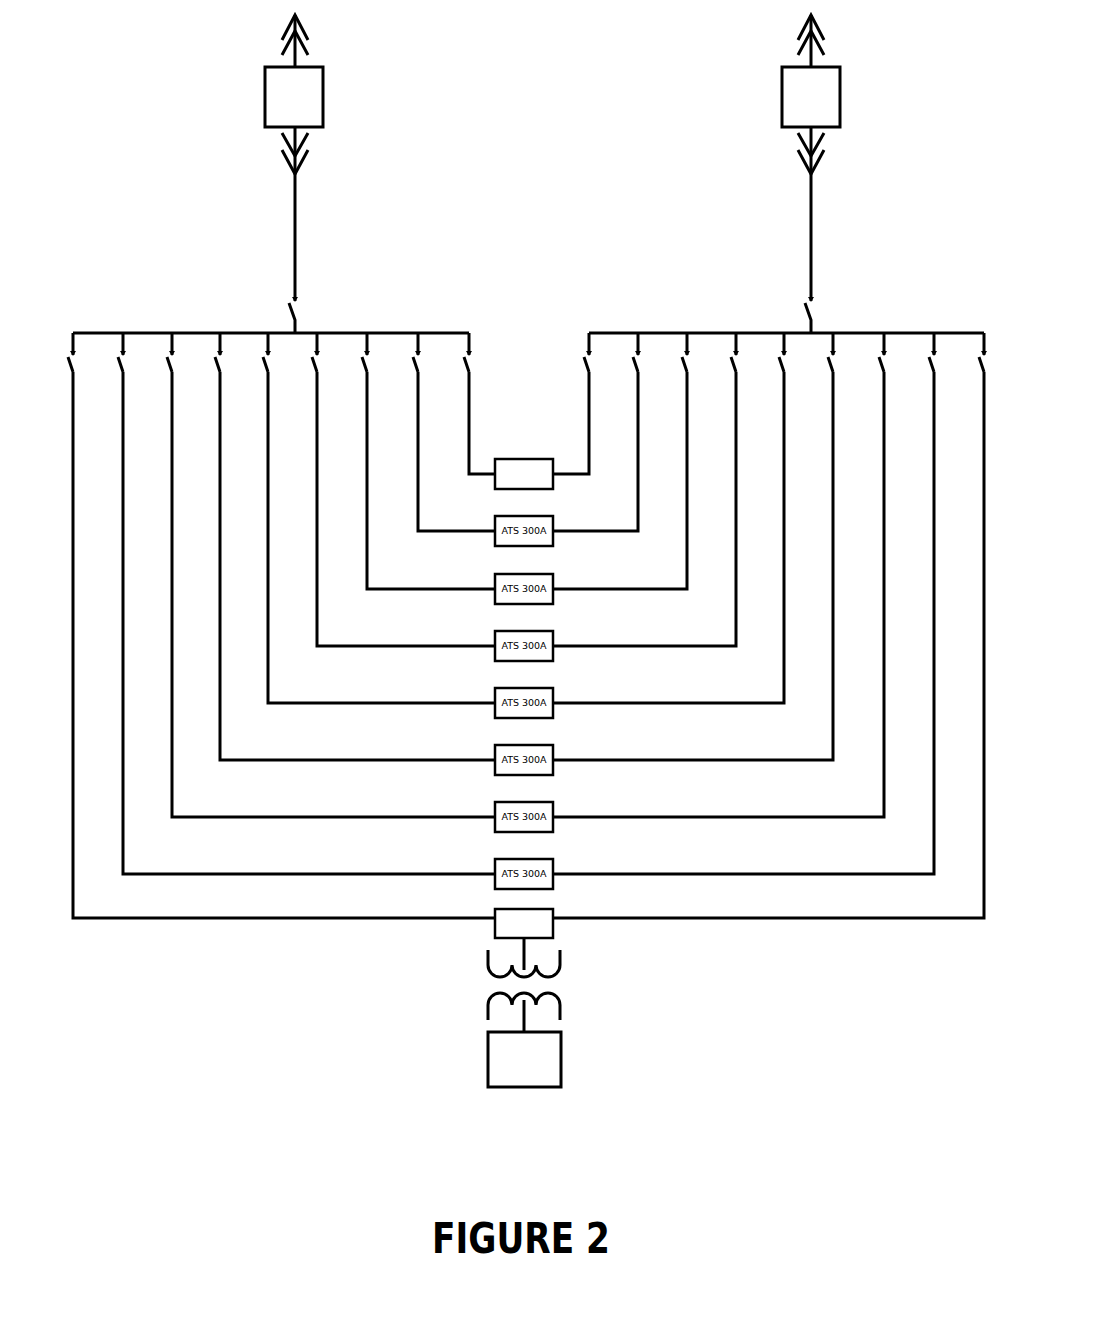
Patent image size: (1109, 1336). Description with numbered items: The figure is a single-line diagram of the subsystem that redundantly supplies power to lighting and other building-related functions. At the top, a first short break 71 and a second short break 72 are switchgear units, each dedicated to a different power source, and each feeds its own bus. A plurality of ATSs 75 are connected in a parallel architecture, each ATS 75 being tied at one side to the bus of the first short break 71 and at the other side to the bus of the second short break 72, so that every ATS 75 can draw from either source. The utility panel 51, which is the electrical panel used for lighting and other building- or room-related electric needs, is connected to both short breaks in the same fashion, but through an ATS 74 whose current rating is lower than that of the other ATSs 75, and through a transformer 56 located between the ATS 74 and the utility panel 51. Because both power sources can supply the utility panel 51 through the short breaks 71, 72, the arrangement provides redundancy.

The first short break 71 is at (333, 96).
The second short break 72 is at (857, 108).
The ATSs 75 is at (529, 450).
The ATS 74 is at (489, 928).
The transformer 56 is at (575, 969).
The utility panel 51 is at (485, 1068).